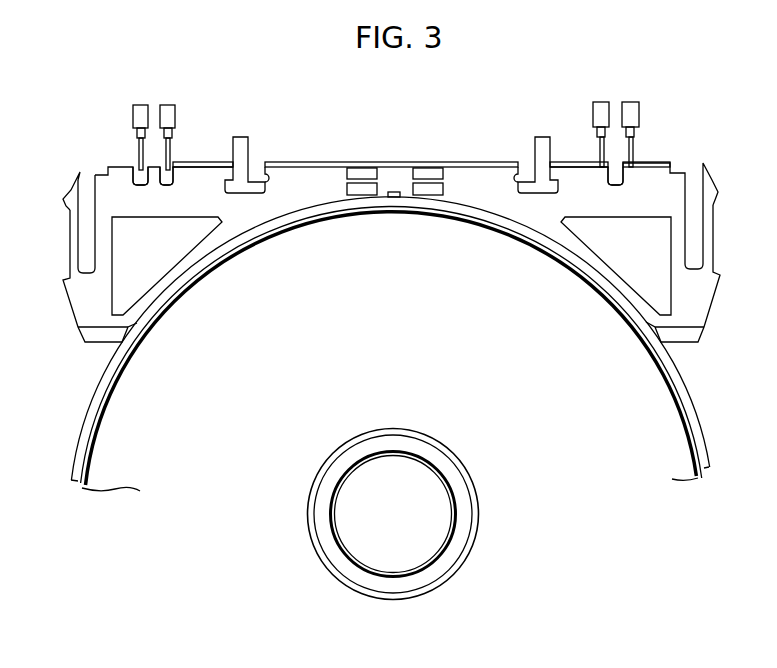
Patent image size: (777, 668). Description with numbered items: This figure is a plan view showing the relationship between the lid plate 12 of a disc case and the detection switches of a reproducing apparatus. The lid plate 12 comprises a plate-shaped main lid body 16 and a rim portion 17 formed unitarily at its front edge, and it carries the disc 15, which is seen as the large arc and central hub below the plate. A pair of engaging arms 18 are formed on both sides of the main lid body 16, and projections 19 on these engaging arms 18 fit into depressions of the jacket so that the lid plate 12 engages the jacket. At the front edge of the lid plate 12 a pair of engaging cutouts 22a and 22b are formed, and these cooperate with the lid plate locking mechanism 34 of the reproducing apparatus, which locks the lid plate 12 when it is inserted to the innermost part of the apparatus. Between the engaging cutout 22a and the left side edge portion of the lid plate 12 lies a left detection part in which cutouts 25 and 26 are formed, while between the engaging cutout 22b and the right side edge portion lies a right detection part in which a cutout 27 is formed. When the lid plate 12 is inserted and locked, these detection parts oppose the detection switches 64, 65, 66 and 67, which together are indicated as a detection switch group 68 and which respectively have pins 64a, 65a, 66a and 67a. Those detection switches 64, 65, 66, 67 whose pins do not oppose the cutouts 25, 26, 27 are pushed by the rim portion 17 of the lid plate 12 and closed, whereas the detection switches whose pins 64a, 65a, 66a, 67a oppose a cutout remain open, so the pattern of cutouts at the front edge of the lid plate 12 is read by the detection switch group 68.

The lid plate 12 is at (422, 162).
The disc 15 is at (93, 420).
The main lid body 16 is at (257, 214).
The rim portion 17 is at (322, 162).
The engaging arms 18 is at (70, 245).
The projections 19 is at (63, 200).
The engaging cutout 22a is at (270, 180).
The engaging cutout 22b is at (514, 180).
The cutout 25 is at (141, 190).
The cutout 26 is at (168, 190).
The cutout 27 is at (614, 188).
The lid plate locking mechanism 34 is at (246, 150).
The detection switch 64 is at (141, 105).
The detection switch 65 is at (170, 105).
The detection switch 66 is at (601, 102).
The detection switch 67 is at (632, 102).
The pin 64a is at (138, 160).
The pin 65a is at (172, 160).
The pin 66a is at (600, 162).
The pin 67a is at (634, 160).
The detection switch group 68 is at (385, 100).